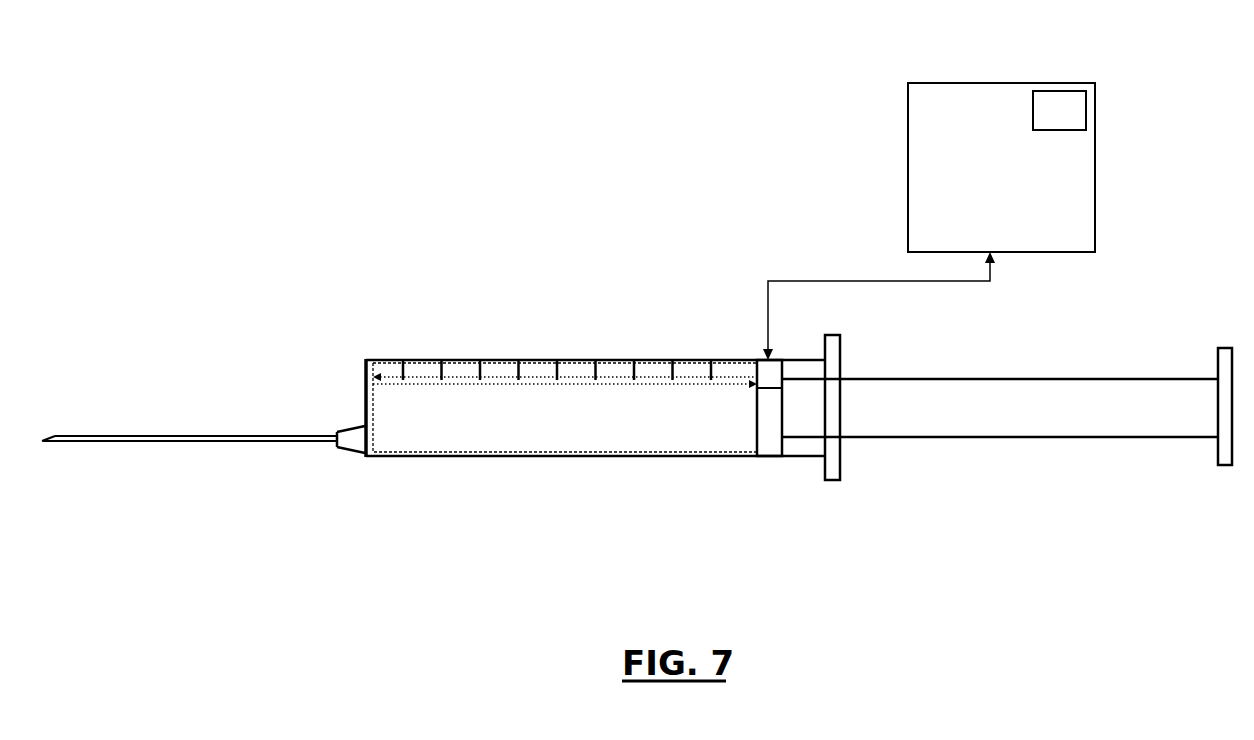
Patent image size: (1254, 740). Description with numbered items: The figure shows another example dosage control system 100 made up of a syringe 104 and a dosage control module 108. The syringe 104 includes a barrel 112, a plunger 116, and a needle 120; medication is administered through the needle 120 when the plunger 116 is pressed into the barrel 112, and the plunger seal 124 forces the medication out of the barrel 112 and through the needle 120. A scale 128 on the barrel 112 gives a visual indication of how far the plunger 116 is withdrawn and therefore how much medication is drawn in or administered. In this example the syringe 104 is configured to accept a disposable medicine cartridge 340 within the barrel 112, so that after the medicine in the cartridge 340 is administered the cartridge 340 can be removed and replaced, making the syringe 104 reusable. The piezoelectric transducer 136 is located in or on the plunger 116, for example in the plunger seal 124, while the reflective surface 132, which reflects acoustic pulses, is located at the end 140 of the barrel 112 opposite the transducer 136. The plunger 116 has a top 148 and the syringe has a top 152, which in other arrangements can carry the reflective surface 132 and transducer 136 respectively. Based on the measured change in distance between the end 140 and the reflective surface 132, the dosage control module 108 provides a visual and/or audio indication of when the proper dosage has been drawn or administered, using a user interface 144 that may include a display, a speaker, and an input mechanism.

The dosage control system 100 is at (484, 142).
The syringe 104 is at (496, 541).
The dosage control module 108 is at (1000, 83).
The barrel 112 is at (596, 458).
The plunger 116 is at (958, 440).
The needle 120 is at (192, 445).
The plunger seal 124 is at (771, 458).
The scale 128 is at (596, 358).
The reflective surface 132 is at (382, 360).
The piezoelectric transducer 136 is at (740, 358).
The end of the barrel 140 is at (366, 358).
The user interface 144 is at (1086, 110).
The top of the plunger 148 is at (1218, 462).
The top of the syringe 152 is at (841, 340).
The disposable medicine cartridge 340 is at (366, 458).